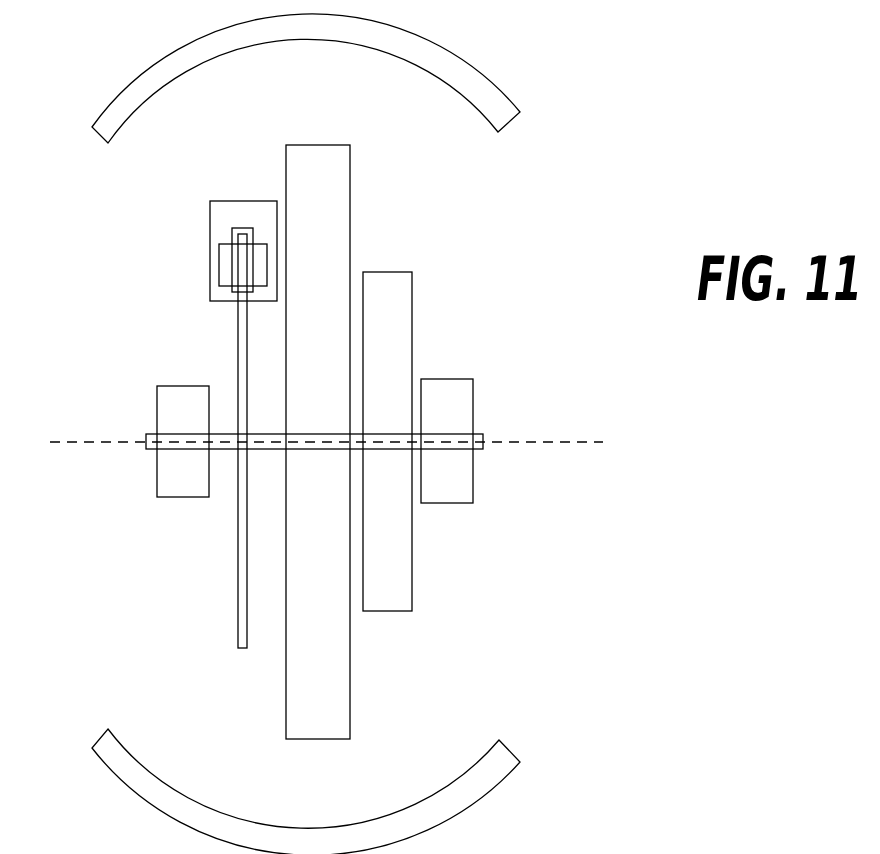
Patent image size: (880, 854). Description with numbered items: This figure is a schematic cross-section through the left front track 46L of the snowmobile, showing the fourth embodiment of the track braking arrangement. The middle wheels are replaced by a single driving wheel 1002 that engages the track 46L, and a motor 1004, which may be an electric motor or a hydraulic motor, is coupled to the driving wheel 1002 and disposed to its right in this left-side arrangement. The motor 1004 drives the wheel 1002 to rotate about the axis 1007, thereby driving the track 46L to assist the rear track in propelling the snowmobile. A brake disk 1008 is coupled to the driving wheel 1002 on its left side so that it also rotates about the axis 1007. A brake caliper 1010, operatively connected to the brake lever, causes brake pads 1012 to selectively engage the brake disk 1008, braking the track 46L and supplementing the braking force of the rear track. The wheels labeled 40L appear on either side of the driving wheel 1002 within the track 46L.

The left front track 46L is at (207, 56).
The driving wheel 1002 is at (302, 183).
The motor 1004 is at (387, 290).
The axis 1007 is at (578, 444).
The brake disk 1008 is at (243, 611).
The brake caliper 1010 is at (218, 232).
The brake pads 1012 is at (257, 278).
The left roller 40L is at (175, 395).